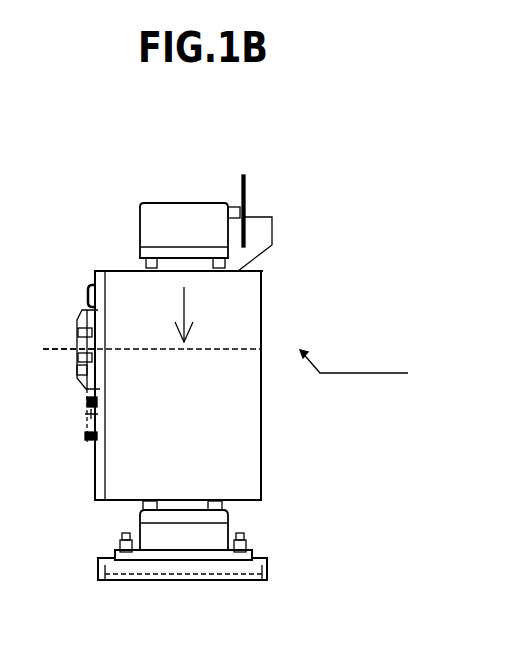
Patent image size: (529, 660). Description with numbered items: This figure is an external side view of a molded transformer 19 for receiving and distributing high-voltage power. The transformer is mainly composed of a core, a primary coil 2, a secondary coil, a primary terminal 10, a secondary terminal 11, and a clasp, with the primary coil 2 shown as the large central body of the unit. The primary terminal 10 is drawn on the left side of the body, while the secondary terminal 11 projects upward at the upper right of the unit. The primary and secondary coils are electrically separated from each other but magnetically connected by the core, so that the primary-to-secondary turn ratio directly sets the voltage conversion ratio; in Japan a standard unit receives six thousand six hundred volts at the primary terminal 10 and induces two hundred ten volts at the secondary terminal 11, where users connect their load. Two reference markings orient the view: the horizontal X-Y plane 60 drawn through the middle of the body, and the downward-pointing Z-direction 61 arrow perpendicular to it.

The primary coil 2 is at (261, 417).
The primary terminal 10 is at (97, 281).
The secondary terminal 11 is at (244, 175).
The molded transformer for receiving and distributing high-voltage power 19 is at (195, 616).
The X-Y plane 60 is at (44, 349).
The Z-direction 61 is at (184, 303).